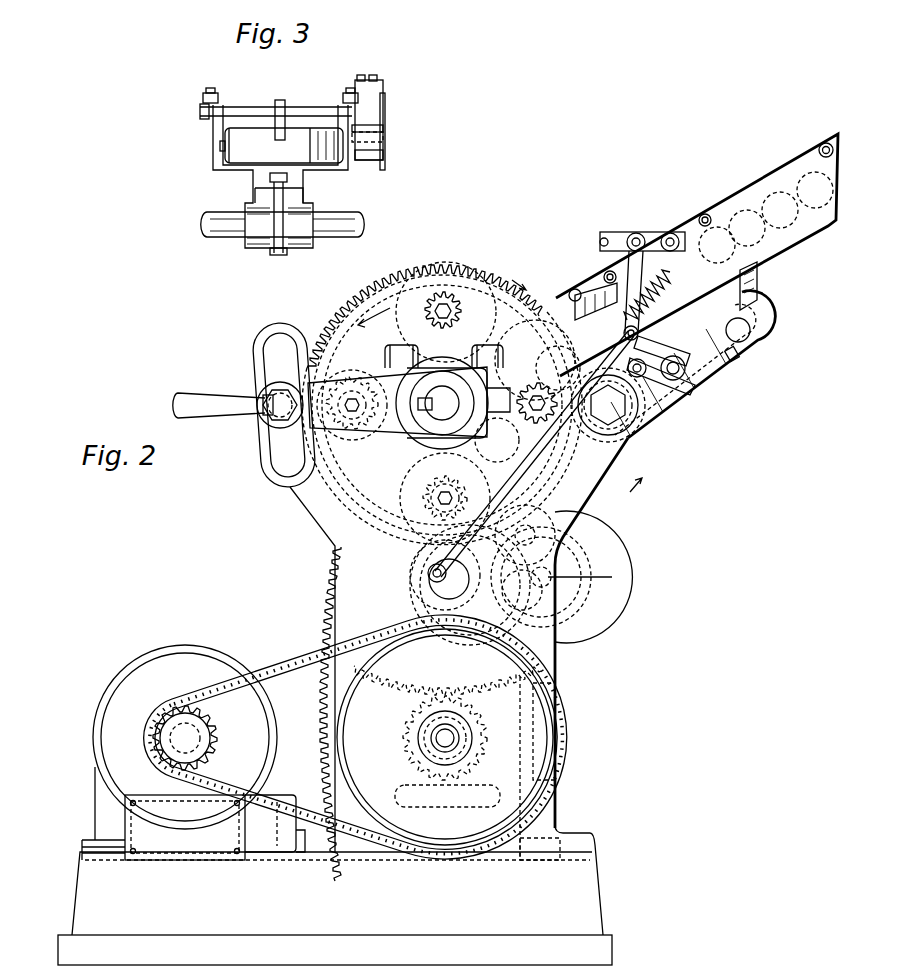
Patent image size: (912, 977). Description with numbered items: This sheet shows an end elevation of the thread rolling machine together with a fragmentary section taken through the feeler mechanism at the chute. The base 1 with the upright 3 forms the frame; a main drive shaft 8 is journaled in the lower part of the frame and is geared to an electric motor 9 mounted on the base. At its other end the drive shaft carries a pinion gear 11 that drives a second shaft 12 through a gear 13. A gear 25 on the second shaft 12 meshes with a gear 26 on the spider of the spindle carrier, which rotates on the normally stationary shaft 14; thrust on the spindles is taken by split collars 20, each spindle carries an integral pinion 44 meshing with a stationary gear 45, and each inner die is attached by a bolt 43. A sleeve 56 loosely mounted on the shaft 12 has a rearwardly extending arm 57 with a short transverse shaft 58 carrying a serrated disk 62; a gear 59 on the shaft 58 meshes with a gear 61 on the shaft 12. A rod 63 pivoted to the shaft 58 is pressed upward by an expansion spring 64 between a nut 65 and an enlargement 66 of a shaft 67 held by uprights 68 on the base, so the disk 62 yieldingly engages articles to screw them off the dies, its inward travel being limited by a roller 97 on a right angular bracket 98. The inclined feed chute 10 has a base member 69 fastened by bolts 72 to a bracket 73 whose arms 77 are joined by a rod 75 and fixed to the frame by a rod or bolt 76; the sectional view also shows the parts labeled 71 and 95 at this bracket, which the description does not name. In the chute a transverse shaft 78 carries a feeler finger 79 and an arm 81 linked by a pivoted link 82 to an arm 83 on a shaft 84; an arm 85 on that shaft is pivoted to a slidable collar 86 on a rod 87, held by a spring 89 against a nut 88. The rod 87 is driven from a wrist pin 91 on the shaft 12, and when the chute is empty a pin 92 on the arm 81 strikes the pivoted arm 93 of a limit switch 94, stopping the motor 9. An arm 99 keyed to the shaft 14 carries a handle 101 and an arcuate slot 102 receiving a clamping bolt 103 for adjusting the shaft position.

In FIG. 2, the base 1 is at (335, 821).
In FIG. 2, the upright 3 is at (574, 381).
In FIG. 2, the main drive shaft 8 is at (462, 742).
In FIG. 2, the electric motor 9 is at (140, 672).
In FIG. 2, the feed chute 10 is at (688, 208).
In FIG. 2, the pinion gear 11 is at (405, 745).
In FIG. 2, the second shaft 12 is at (430, 598).
In FIG. 2, the gear 13 is at (324, 600).
In FIG. 2, the shaft 14 is at (444, 397).
In FIG. 2, the split collars 20 is at (470, 275).
In FIG. 2, the gear 25 is at (410, 570).
In FIG. 2, the gear 26 is at (455, 268).
In FIG. 2, the bolt 43 is at (432, 302).
In FIG. 2, the pinion 44 is at (472, 306).
In FIG. 2, the stationary gear 45 is at (410, 312).
In FIG. 2, the sleeve 56 is at (432, 568).
In FIG. 2, the arm 57 is at (540, 590).
In FIG. 2, the transverse shaft 58 is at (612, 577).
In FIG. 2, the gear 59 is at (587, 557).
In FIG. 2, the gear 61 is at (420, 590).
In FIG. 2, the disk 62 is at (605, 590).
In FIG. 2, the rod 63 is at (568, 740).
In FIG. 2, the expansion spring 64 is at (558, 650).
In FIG. 2, the nut 65 is at (525, 618).
In FIG. 2, the enlargement 66 is at (515, 686).
In FIG. 2, the shaft 67 is at (535, 705).
In FIG. 2, the uprights 68 is at (560, 810).
In FIG. 2, the base member 69 is at (758, 280).
In FIG. 3, the nut 71 is at (270, 180).
In FIG. 2, the bolts 72 is at (755, 305).
In FIG. 3, the bracket 73 is at (277, 218).
In FIG. 3, the rod 75 is at (228, 228).
In FIG. 2, the rod 75 is at (752, 335).
In FIG. 2, the rod or bolt 76 is at (614, 422).
In FIG. 2, the arms 77 is at (712, 368).
In FIG. 3, the transverse shaft 78 is at (298, 108).
In FIG. 2, the transverse shaft 78 is at (670, 233).
In FIG. 3, the feeler finger 79 is at (276, 105).
In FIG. 2, the feeler finger 79 is at (640, 234).
In FIG. 3, the arm 81 is at (385, 104).
In FIG. 2, the arm 81 is at (622, 232).
In FIG. 3, the pivoted link 82 is at (385, 124).
In FIG. 2, the pivoted link 82 is at (605, 272).
In FIG. 2, the arm 83 is at (645, 375).
In FIG. 2, the shaft 84 is at (682, 378).
In FIG. 2, the arm 85 is at (672, 355).
In FIG. 2, the slidable collar 86 is at (556, 356).
In FIG. 2, the rod 87 is at (535, 450).
In FIG. 2, the nut 88 is at (540, 390).
In FIG. 2, the spring 89 is at (670, 280).
In FIG. 2, the wrist pin 91 is at (428, 574).
In FIG. 2, the pin 92 is at (602, 243).
In FIG. 3, the pivoted arm 93 is at (383, 137).
In FIG. 2, the pivoted arm 93 is at (585, 298).
In FIG. 2, the limit switch 94 is at (550, 320).
In FIG. 3, the cylinder 95 is at (222, 138).
In FIG. 2, the roller 97 is at (530, 548).
In FIG. 2, the right angular bracket 98 is at (545, 538).
In FIG. 2, the arm 99 is at (405, 430).
In FIG. 2, the handle 101 is at (210, 393).
In FIG. 2, the arcuate slot 102 is at (285, 345).
In FIG. 2, the clamping bolt 103 is at (262, 430).